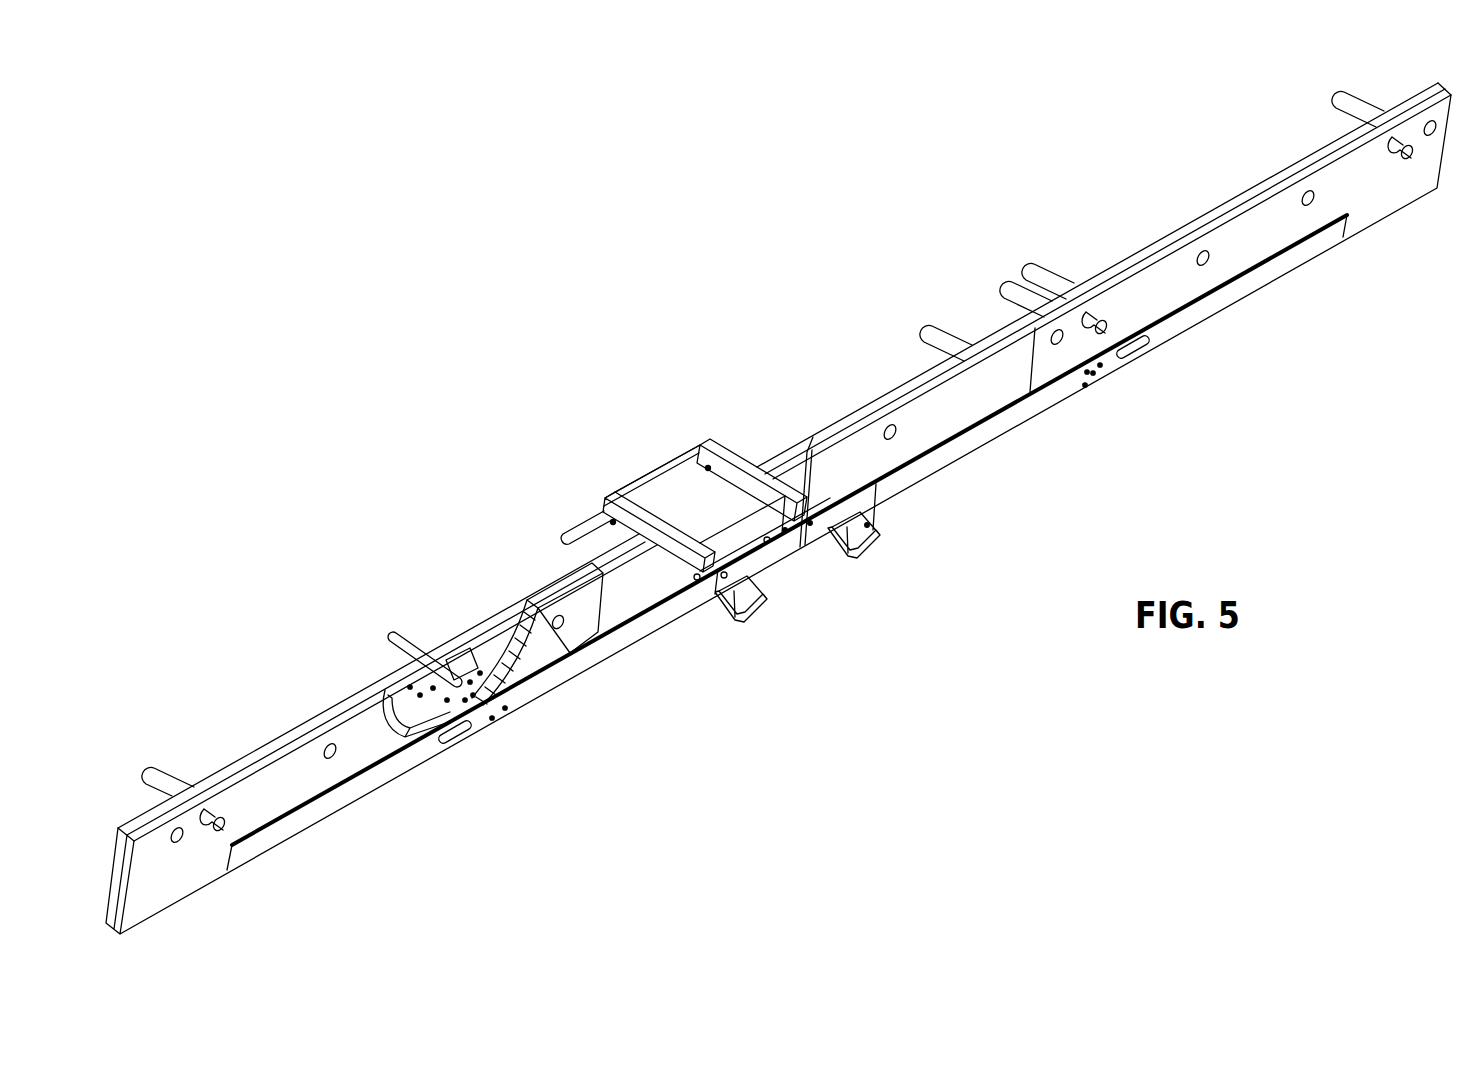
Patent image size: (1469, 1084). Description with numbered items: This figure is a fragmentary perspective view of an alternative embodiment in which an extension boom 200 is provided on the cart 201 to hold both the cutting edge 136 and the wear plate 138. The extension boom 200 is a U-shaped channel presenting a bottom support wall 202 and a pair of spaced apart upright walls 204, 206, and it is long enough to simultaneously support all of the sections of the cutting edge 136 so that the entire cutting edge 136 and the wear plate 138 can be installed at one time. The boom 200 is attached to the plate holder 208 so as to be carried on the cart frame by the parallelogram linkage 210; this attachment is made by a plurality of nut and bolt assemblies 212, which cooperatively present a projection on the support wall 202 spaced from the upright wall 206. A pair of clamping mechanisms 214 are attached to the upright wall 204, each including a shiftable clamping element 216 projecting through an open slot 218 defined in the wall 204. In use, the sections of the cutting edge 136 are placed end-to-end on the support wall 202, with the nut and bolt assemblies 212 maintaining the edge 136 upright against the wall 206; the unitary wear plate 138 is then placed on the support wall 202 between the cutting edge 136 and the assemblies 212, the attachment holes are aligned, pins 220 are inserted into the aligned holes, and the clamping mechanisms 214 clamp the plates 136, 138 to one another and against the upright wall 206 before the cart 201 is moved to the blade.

The cutting edge 136 is at (298, 787).
The wear plate 138 is at (870, 410).
The extension boom 200 is at (657, 627).
The cart 201 is at (656, 492).
The bottom support wall 202 is at (675, 590).
The upright wall 204 is at (757, 527).
The upright wall 206 is at (553, 680).
The plate holder 208 is at (815, 538).
The parallelogram linkage 210 is at (582, 532).
The nut and bolt assemblies 212 is at (716, 575).
The clamping mechanism 214 is at (457, 667).
The shiftable clamping element 216 is at (437, 738).
The open slot 218 is at (393, 722).
The pin 220 is at (170, 773).